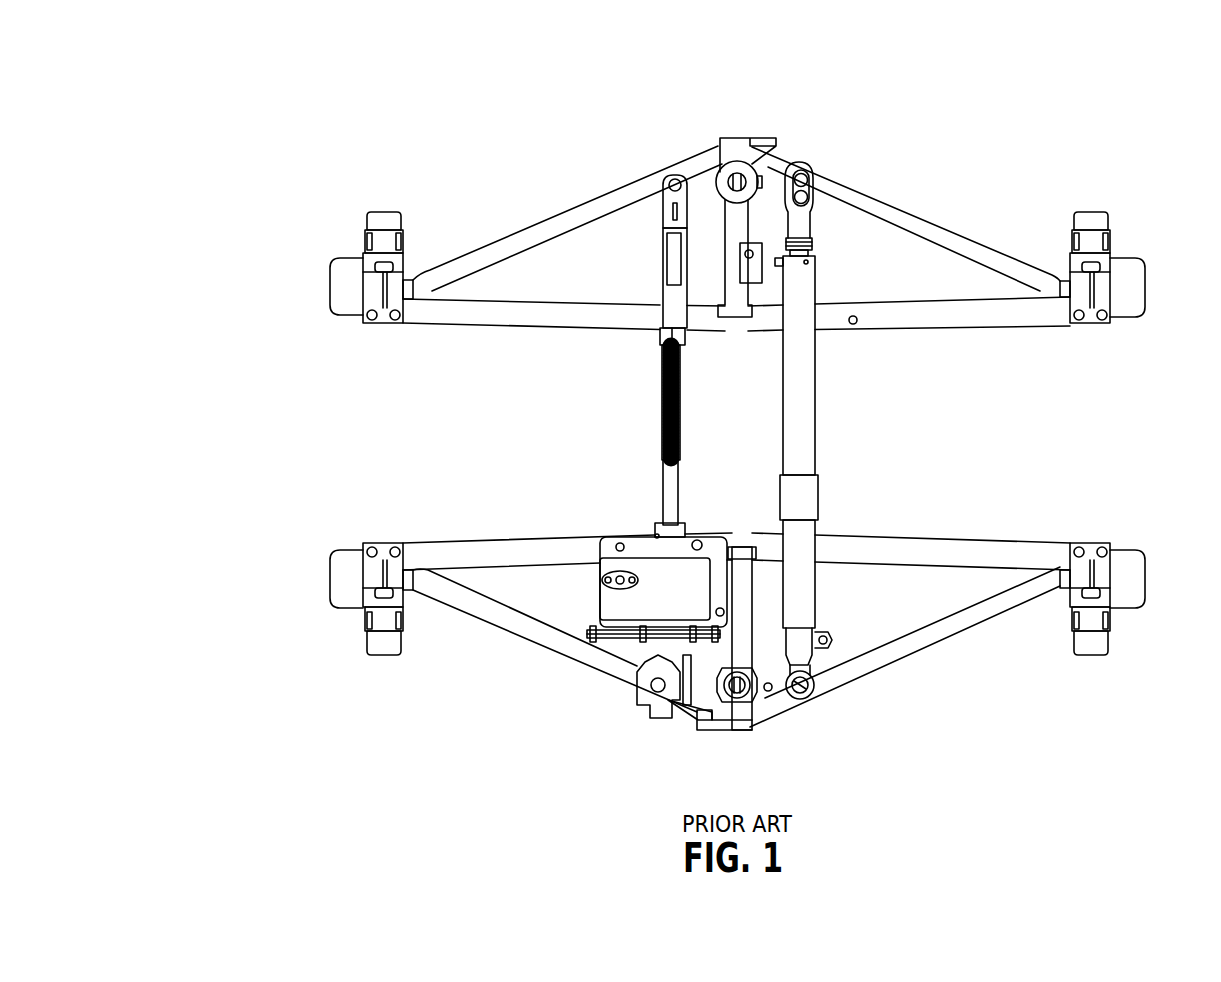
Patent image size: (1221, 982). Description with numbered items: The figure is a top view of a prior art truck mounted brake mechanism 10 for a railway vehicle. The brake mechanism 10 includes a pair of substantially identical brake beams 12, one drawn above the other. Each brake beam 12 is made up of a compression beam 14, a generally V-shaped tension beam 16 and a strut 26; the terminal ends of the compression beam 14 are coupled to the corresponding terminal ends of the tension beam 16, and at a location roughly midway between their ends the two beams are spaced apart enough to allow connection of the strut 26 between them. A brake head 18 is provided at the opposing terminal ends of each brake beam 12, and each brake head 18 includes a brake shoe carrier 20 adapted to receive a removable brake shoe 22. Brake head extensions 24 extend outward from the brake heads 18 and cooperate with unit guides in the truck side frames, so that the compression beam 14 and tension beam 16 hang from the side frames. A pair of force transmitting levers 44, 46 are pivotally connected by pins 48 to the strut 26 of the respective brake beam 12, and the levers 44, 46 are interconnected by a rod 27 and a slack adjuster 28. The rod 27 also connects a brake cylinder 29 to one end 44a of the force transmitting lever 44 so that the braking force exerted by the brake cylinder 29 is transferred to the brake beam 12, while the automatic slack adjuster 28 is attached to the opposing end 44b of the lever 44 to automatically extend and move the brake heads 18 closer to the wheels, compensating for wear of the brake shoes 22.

The brake mechanism 10 is at (258, 188).
The brake beams 12 is at (544, 156).
The compression beam 14 is at (510, 322).
The tension beam 16 is at (518, 243).
The brake head 18 is at (386, 326).
The brake shoe carrier 20 is at (366, 256).
The brake shoe 22 is at (383, 212).
The brake head extensions 24 is at (350, 285).
The strut 26 is at (734, 320).
The rod 27 is at (661, 412).
The slack adjuster 28 is at (818, 416).
The brake cylinder 29 is at (653, 577).
The force transmitting lever 44 is at (696, 718).
The one end of the force transmitting lever 44a is at (660, 705).
The opposing end of the force transmitting lever 44b is at (775, 700).
The force transmitting lever 46 is at (717, 173).
The pins 48 is at (726, 147).